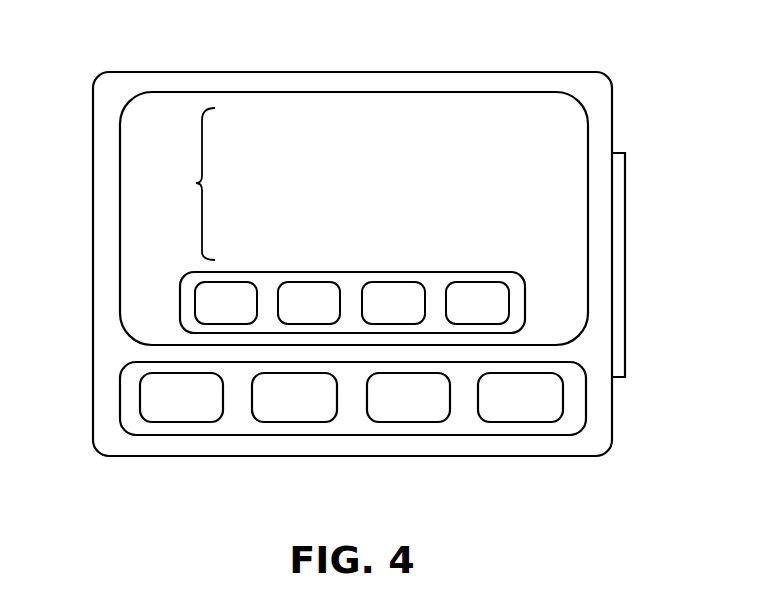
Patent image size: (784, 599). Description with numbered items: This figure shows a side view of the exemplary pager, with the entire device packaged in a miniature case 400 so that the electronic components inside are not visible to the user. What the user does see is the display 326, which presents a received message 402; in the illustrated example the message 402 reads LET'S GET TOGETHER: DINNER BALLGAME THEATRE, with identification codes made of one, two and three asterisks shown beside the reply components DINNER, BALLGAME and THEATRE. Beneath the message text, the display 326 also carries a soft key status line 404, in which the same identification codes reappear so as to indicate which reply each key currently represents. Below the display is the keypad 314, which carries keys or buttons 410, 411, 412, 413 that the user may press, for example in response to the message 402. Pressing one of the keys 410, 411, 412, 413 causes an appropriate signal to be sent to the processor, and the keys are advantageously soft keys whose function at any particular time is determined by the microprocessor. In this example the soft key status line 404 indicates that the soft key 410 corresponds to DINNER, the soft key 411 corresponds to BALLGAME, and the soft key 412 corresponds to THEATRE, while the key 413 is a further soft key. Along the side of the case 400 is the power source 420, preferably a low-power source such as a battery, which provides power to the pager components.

The miniature case 400 is at (172, 72).
The display 326 is at (120, 247).
The message 402 is at (198, 183).
The soft key status line 404 is at (180, 313).
The keypad 314 is at (120, 396).
The soft key 410 is at (178, 422).
The soft key 411 is at (293, 422).
The soft key 412 is at (410, 422).
The soft key 413 is at (525, 422).
The power source 420 is at (625, 262).